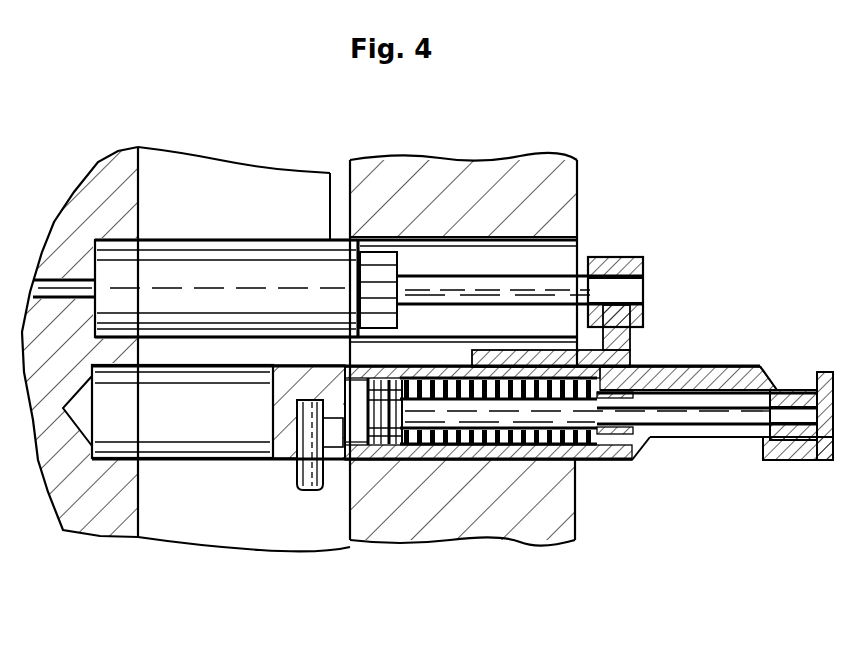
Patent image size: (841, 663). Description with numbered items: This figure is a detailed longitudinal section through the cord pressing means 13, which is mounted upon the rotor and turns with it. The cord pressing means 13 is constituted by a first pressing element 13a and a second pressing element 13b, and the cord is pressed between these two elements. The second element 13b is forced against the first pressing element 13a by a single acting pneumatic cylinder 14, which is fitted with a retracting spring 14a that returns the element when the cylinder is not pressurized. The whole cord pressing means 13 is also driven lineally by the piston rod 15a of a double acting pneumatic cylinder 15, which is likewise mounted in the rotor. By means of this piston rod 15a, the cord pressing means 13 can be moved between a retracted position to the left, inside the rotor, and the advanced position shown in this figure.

The cord pressing means 13 is at (760, 368).
The first pressing element 13a is at (800, 462).
The second pressing element 13b is at (816, 392).
The single acting pneumatic cylinder 14 is at (578, 442).
The retracting spring 14a is at (467, 450).
The double acting pneumatic cylinder 15 is at (200, 268).
The piston rod 15a is at (460, 273).